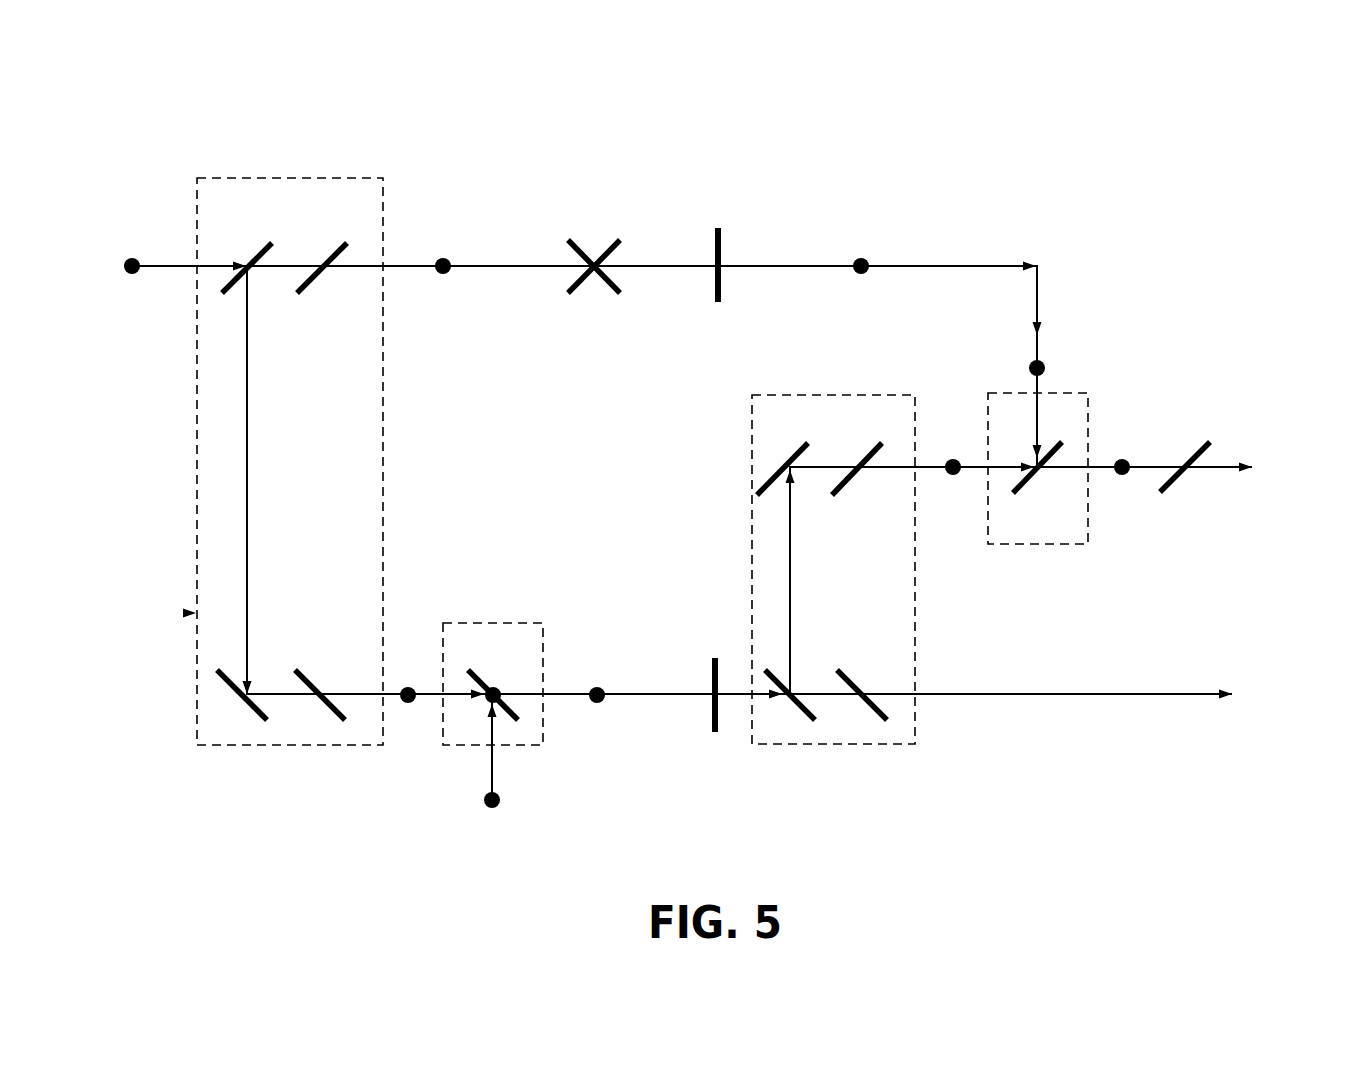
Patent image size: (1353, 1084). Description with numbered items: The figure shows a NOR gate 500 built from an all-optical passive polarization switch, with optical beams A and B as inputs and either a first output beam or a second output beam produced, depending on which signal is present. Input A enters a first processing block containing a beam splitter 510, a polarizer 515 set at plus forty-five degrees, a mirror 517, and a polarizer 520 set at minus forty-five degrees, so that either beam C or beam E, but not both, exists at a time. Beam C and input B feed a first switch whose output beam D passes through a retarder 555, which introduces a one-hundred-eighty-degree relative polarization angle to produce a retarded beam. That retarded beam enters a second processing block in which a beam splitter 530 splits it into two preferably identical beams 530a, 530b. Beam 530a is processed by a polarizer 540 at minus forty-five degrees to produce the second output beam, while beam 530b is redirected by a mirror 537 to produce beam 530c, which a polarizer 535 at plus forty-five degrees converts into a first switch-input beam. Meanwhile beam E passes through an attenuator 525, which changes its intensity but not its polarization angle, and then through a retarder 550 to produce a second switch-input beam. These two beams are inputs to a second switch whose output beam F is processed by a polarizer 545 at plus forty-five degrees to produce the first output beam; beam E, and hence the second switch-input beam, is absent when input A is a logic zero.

The NOR gate 500 is at (1160, 100).
The beam splitter 510 is at (264, 240).
The polarizer 515 is at (339, 240).
The mirror 517 is at (254, 720).
The polarizer 520 is at (334, 720).
The attenuator 525 is at (602, 245).
The retarder 550 is at (708, 240).
The retarder 555 is at (705, 718).
The beam splitter 530 is at (790, 706).
The beam 530a is at (810, 693).
The beam 530b is at (790, 542).
The beam 530c is at (805, 472).
The polarizer 535 is at (856, 454).
The mirror 537 is at (781, 454).
The polarizer 540 is at (876, 720).
The polarizer 545 is at (1186, 450).